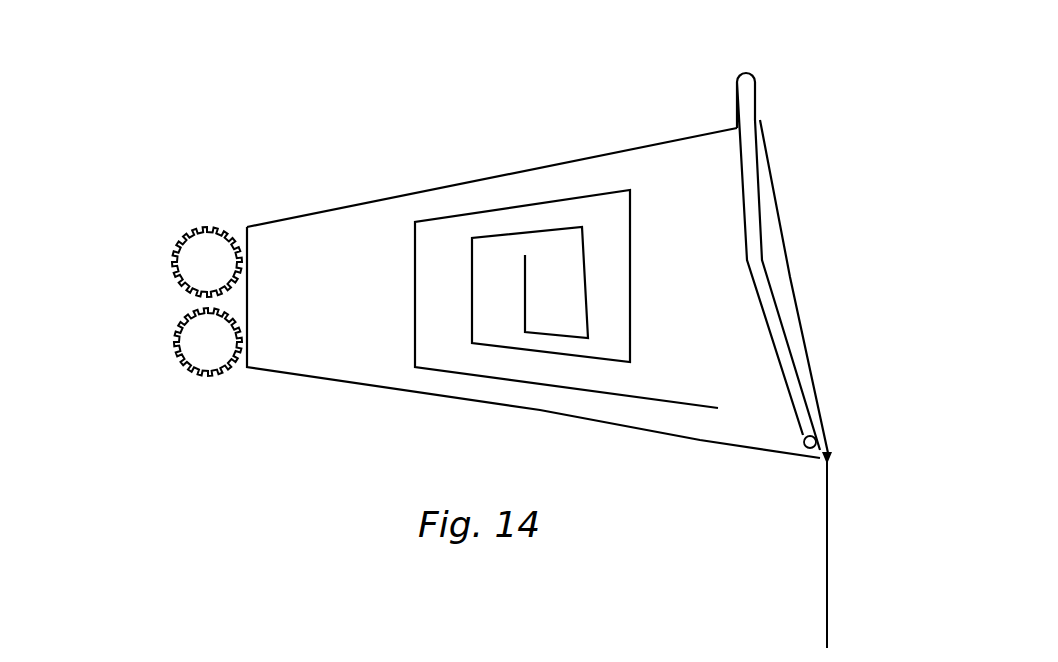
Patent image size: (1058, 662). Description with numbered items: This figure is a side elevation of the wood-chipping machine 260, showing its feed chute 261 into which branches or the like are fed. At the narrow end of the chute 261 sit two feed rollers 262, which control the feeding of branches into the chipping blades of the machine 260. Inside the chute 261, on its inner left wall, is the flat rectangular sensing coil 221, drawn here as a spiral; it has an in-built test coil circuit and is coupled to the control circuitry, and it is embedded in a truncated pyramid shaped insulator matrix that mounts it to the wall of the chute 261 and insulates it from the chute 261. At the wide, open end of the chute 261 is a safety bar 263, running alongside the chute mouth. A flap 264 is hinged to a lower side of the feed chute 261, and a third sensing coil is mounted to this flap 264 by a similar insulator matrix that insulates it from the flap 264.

The wood-chipping machine 260 is at (694, 496).
The sensing coil 221 is at (631, 297).
The feed chute 261 is at (787, 240).
The feed rollers 262 is at (178, 320).
The safety bar 263 is at (755, 78).
The flap 264 is at (827, 565).